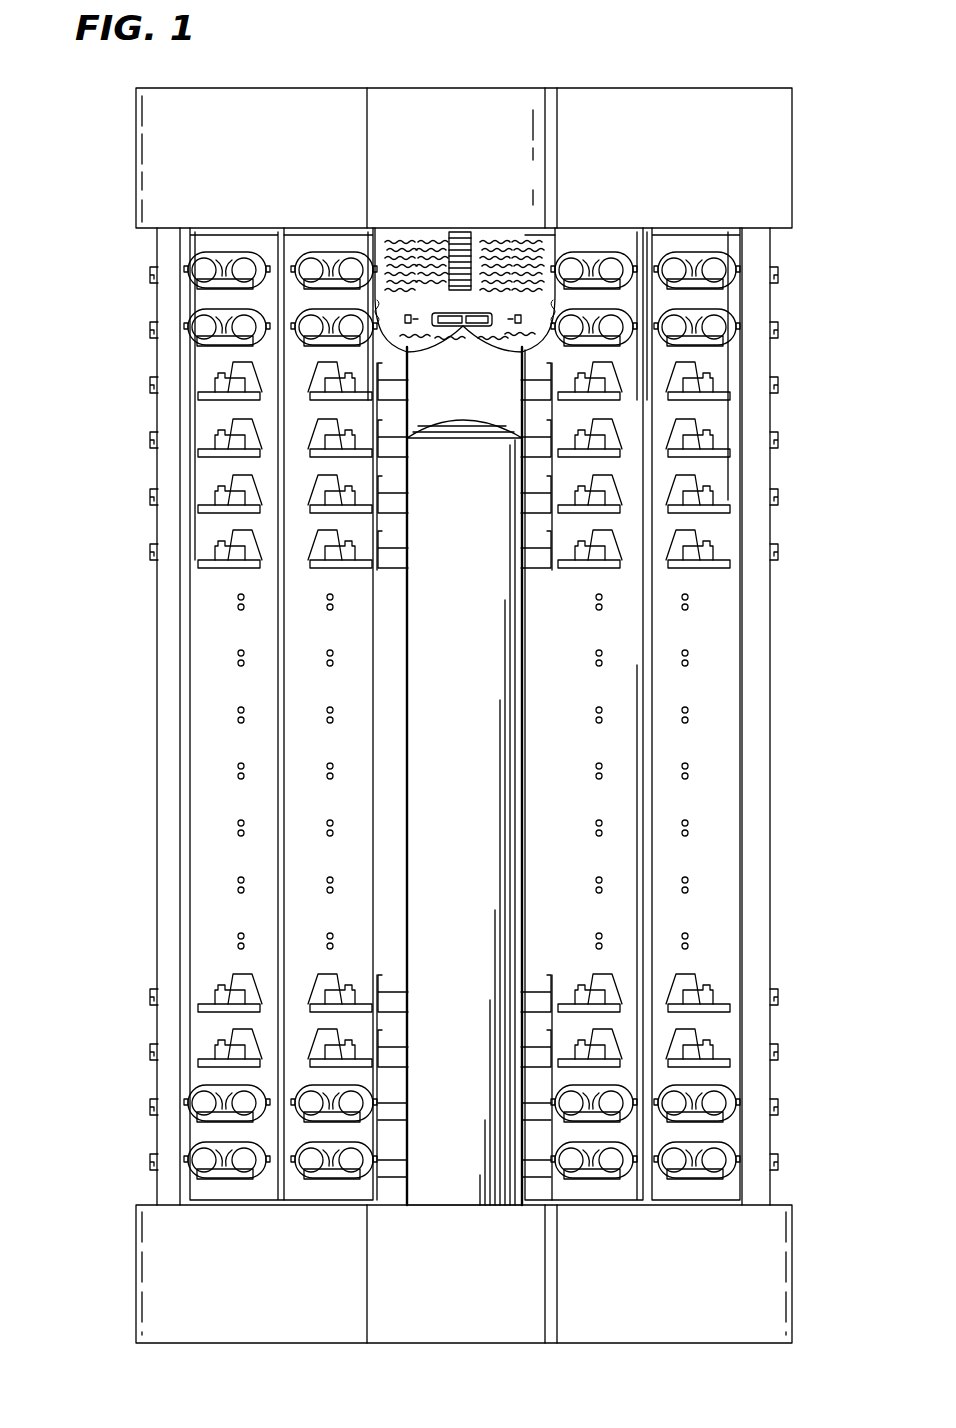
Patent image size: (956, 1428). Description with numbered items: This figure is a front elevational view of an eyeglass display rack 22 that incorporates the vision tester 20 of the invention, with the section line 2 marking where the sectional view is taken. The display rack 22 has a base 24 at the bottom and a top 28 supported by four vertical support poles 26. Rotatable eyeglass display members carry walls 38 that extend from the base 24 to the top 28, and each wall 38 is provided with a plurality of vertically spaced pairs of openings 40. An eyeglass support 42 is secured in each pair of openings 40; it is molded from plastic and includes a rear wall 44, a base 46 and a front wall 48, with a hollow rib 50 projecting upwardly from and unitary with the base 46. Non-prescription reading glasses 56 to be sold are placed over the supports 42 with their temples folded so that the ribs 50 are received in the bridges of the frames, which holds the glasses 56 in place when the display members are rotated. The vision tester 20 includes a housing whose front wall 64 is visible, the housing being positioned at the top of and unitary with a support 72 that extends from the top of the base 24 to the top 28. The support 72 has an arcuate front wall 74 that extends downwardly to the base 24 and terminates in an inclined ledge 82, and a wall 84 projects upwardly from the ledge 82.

The section line 2- 2 is at (115, 300).
The vision tester 20 is at (428, 222).
The display rack 22 is at (464, 776).
The base 24 is at (686, 1310).
The vertical support poles 26 is at (157, 795).
The top 28 is at (250, 181).
The walls 38 is at (250, 760).
The openings 40 is at (336, 713).
The eyeglass support 42 is at (208, 576).
The rear wall 44 is at (332, 545).
The base 46 is at (319, 580).
The front wall 48 is at (345, 568).
The hollow rib 50 is at (343, 556).
The glasses 56 is at (327, 1168).
The front wall 64 is at (503, 333).
The support 72 is at (432, 1212).
The arcuate front wall 74 is at (472, 888).
The inclined ledge 82 is at (470, 440).
The wall 84 is at (441, 423).